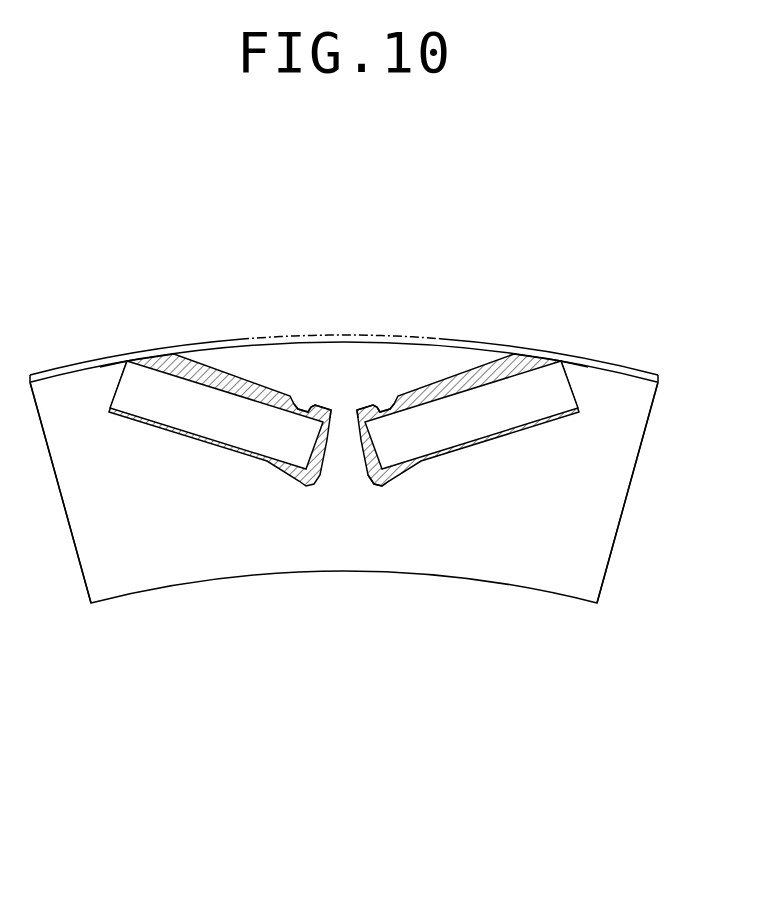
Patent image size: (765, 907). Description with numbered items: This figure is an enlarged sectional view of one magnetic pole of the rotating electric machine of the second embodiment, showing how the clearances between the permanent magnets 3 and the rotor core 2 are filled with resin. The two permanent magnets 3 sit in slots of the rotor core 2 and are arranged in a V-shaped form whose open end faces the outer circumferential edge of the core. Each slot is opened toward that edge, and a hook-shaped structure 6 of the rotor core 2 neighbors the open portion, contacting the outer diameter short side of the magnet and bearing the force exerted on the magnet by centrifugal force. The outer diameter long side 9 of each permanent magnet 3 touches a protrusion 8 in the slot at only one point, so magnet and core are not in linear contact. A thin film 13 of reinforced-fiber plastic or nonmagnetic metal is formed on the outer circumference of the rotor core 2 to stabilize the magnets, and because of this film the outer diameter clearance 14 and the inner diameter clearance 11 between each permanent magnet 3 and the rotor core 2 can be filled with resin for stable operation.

The rotor core 2 is at (155, 570).
The permanent magnet 3 is at (153, 383).
The hook-shaped structure 6 is at (103, 383).
The protrusion 8 is at (305, 407).
The outer diameter long side 9 is at (205, 380).
The inner diameter clearance 11 is at (380, 488).
The thin film 13 is at (470, 343).
The outer diameter clearance 14 is at (515, 352).